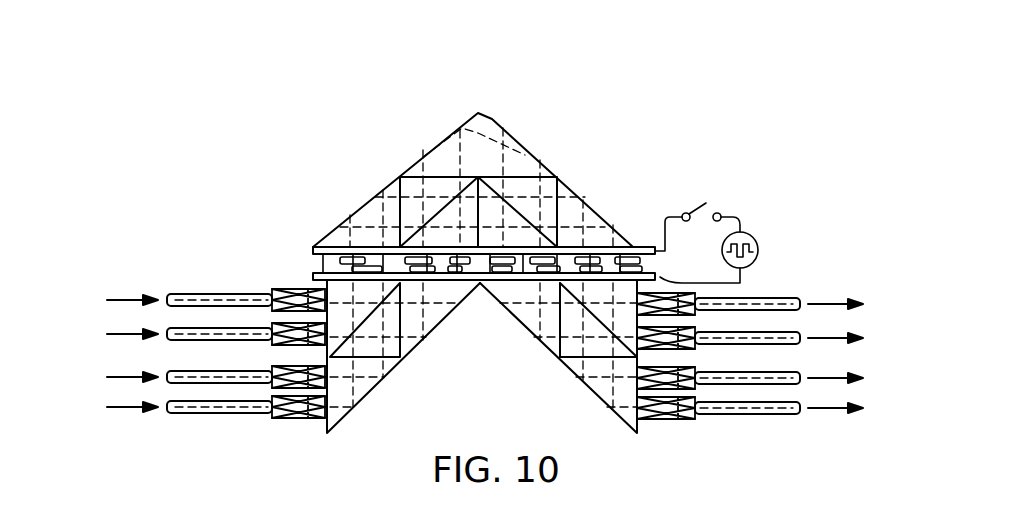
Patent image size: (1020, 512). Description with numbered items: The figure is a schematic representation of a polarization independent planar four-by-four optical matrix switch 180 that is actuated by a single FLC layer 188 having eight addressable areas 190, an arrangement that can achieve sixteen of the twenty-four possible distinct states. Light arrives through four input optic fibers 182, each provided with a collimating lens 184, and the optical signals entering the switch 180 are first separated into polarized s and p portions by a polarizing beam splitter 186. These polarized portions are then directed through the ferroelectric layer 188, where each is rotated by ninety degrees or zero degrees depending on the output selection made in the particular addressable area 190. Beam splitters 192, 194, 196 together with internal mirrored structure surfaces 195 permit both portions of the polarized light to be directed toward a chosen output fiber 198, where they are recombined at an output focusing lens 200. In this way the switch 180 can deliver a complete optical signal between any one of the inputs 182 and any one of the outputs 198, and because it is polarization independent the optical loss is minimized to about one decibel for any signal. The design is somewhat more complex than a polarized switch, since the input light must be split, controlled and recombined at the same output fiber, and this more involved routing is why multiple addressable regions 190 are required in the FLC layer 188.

The optical matrix switch 180 is at (571, 138).
The input optic fibers 182 is at (206, 294).
The collimating lenses 184 is at (290, 289).
The polarizing beam splitter 186 is at (410, 348).
The FLC layer 188 is at (641, 250).
The addressable areas 190 is at (610, 247).
The beam splitter 192 is at (423, 196).
The beam splitter 194 is at (525, 188).
The internal mirrored structure surfaces 195 is at (370, 212).
The beam splitter 196 is at (562, 361).
The output fiber 198 is at (783, 415).
The output focusing lens 200 is at (665, 422).